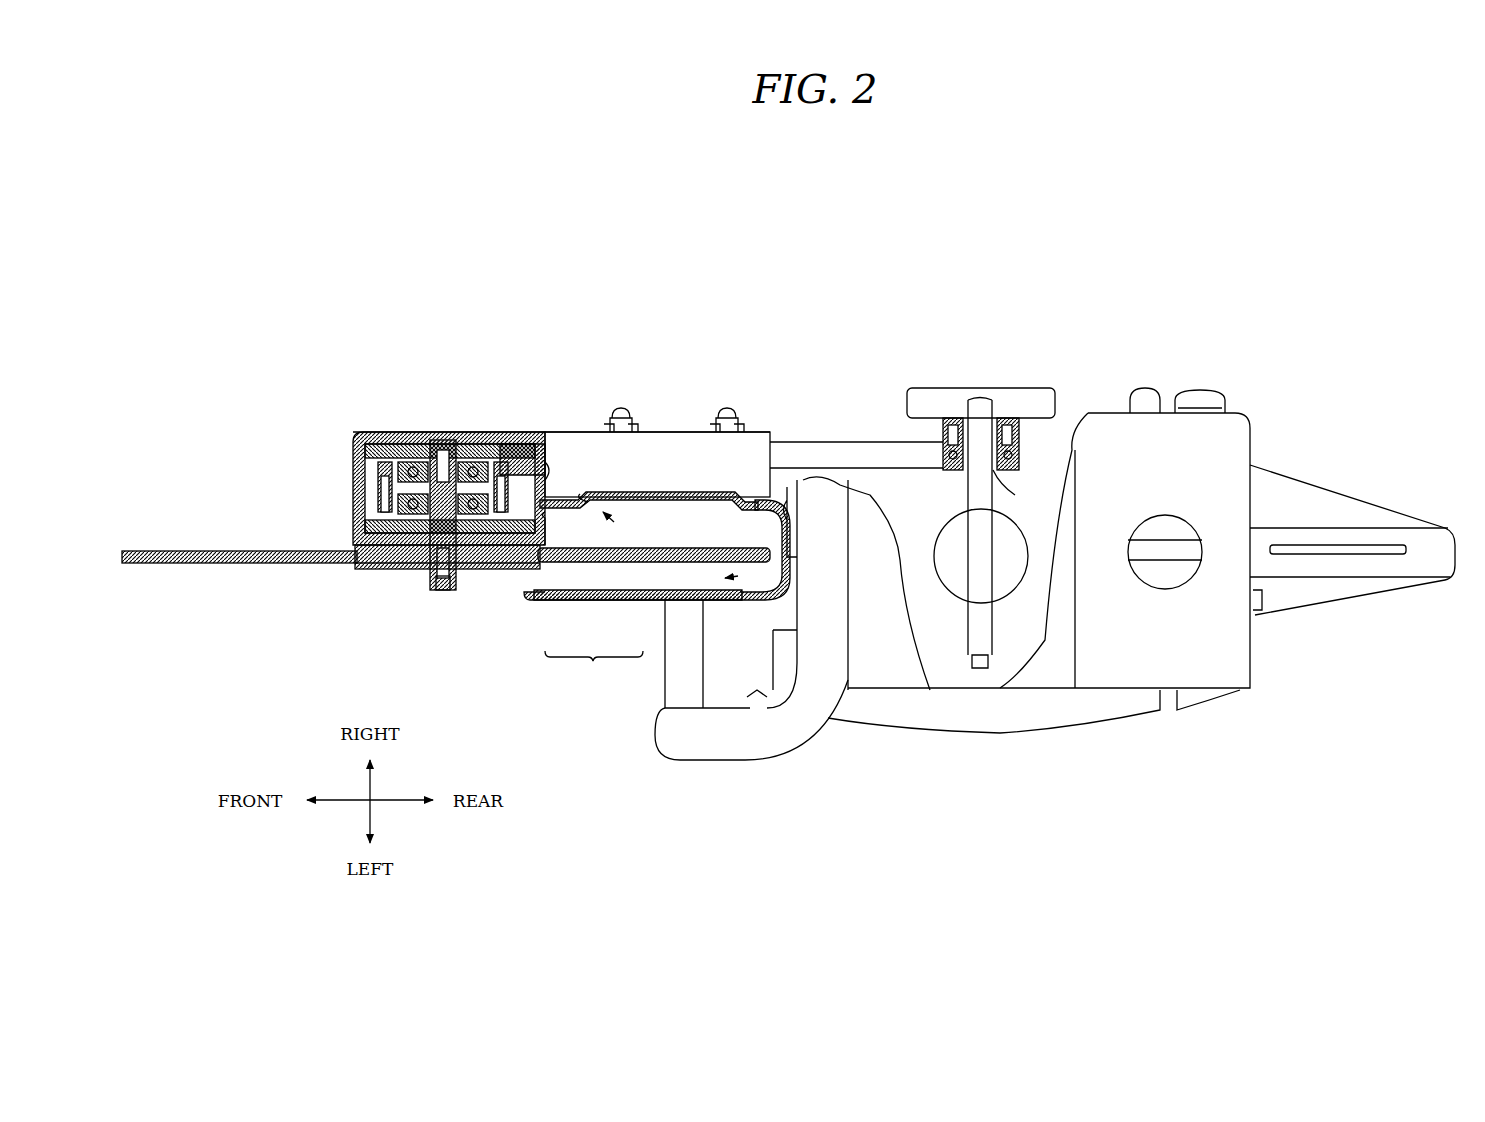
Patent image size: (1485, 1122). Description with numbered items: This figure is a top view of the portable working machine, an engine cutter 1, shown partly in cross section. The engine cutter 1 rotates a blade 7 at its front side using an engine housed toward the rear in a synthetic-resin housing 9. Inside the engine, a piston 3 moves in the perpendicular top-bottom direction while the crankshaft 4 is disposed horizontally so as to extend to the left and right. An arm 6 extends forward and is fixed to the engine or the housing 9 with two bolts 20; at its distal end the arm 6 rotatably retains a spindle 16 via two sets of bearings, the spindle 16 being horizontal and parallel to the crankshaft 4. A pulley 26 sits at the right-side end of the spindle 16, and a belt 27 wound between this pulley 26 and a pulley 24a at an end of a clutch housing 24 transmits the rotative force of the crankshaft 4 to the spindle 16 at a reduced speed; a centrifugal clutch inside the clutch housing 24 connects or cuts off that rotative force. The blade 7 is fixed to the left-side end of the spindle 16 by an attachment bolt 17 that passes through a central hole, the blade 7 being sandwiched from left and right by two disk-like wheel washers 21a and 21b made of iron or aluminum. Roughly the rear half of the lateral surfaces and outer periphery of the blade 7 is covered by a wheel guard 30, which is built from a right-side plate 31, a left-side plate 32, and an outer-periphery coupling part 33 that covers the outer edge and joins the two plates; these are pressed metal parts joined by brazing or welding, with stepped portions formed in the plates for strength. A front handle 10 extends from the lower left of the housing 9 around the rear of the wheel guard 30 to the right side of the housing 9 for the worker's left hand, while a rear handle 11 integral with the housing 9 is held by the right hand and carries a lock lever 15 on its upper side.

The engine cutter 1 is at (1332, 212).
The piston 3 is at (958, 572).
The crankshaft 4 is at (975, 650).
The arm 6 is at (597, 470).
The blade 7 is at (257, 565).
The housing 9 is at (1192, 652).
The front handle 10 is at (733, 746).
The rear handle 11 is at (1393, 565).
The lock lever 15 is at (1320, 548).
The spindle 16 is at (358, 497).
The attachment bolt 17 is at (448, 594).
The bolts 20 is at (622, 418).
The wheel washer 21a is at (352, 551).
The wheel washer 21b is at (358, 568).
The clutch housing 24 is at (946, 405).
The pulley 24a is at (945, 455).
The pulley 26 is at (398, 436).
The belt 27 is at (528, 444).
The wheel guard 30 is at (581, 688).
The right-side plate 31 is at (566, 602).
The left-side plate 32 is at (606, 600).
The outer-periphery coupling part 33 is at (772, 586).